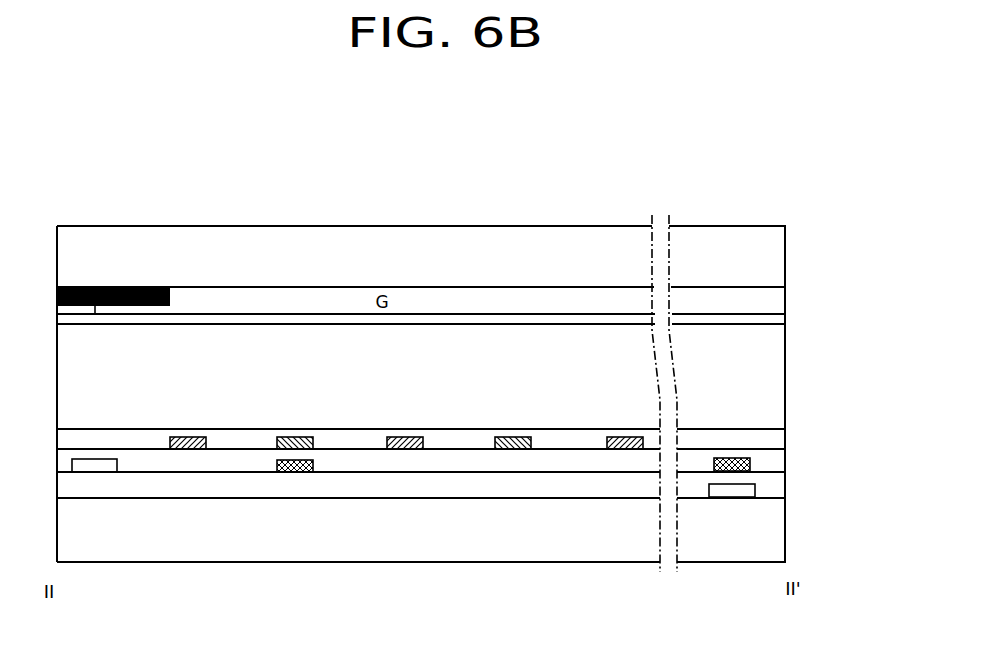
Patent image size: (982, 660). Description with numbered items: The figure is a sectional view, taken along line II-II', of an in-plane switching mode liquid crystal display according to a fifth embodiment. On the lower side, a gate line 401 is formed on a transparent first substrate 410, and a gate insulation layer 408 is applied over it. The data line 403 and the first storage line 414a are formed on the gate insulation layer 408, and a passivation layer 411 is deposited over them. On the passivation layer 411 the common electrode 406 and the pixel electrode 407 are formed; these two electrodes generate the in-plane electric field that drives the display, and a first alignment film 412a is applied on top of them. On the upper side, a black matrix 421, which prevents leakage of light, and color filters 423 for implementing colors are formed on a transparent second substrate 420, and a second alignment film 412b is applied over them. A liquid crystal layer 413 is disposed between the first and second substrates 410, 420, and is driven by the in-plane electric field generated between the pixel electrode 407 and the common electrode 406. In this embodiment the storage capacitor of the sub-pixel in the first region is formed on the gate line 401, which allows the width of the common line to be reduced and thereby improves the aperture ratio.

The black matrix 421 is at (123, 287).
The color filters 423 is at (288, 295).
The second substrate 420 is at (778, 250).
The second alignment film 412b is at (783, 318).
The liquid crystal layer 413 is at (778, 381).
The first alignment film 412a is at (777, 435).
The passivation layer 411 is at (777, 460).
The gate insulation layer 408 is at (777, 490).
The first substrate 410 is at (777, 532).
The data line 403 is at (97, 472).
The common electrode 406 is at (404, 449).
The pixel electrode 407 is at (513, 449).
The first storage line 414a is at (728, 471).
The gate line 401 is at (743, 497).